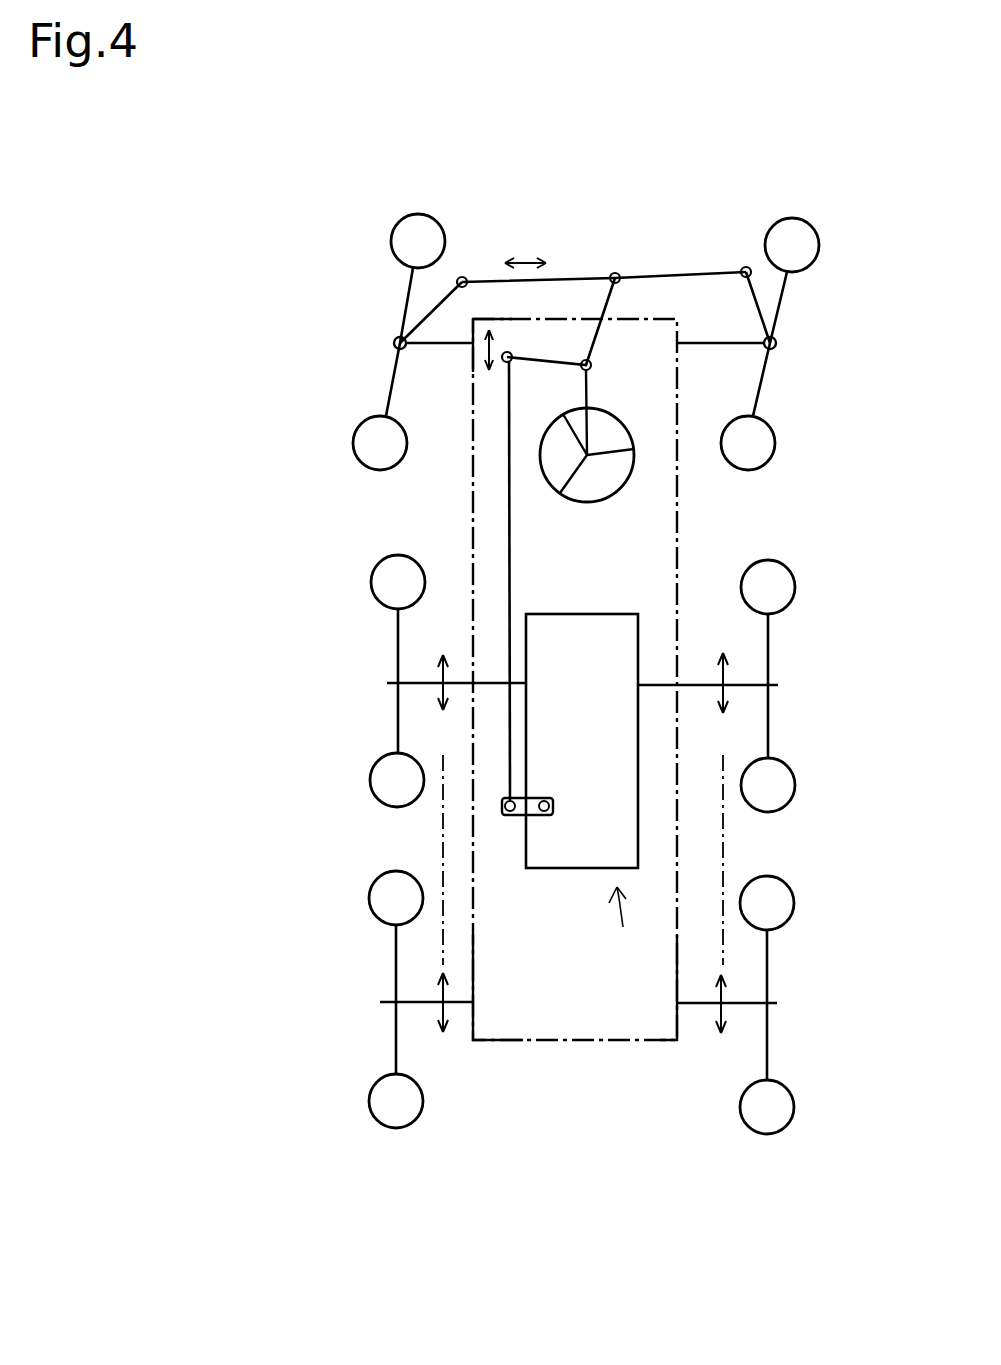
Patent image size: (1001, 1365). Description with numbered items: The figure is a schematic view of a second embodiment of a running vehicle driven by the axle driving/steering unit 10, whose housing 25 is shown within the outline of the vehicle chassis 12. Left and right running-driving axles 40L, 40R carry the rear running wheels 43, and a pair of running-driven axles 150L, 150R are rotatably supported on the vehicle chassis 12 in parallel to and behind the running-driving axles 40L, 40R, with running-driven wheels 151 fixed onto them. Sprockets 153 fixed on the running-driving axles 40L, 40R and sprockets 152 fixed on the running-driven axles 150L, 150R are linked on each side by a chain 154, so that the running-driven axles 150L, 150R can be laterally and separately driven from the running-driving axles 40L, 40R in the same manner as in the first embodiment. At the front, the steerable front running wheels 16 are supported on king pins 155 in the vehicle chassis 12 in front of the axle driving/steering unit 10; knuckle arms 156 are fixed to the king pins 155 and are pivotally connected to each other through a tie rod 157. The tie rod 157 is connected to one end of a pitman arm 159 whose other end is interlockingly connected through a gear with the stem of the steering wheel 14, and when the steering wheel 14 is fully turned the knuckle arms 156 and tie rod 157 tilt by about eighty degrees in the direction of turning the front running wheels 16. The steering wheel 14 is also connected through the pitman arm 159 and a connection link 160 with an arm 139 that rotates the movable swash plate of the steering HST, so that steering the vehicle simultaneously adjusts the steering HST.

The axle driving/steering unit 10 is at (624, 928).
The vehicle chassis 12 is at (490, 1040).
The steering wheel 14 is at (602, 500).
The front running wheels 16 is at (395, 227).
The housing 25 is at (598, 860).
The left running-driving axle 40L is at (413, 683).
The right running-driving axle 40R is at (752, 690).
The rear running wheels 43 is at (371, 587).
The arm 139 is at (510, 812).
The left running-driven axle 150L is at (387, 1000).
The right running-driven axle 150R is at (777, 1003).
The running-driven wheels 151 is at (369, 893).
The sprockets 152 is at (445, 1012).
The sprockets 153 is at (441, 657).
The chain 154 is at (441, 823).
The king pins 155 is at (393, 343).
The knuckle arms 156 is at (458, 285).
The tie rod 157 is at (660, 274).
The pitman arm 159 is at (613, 272).
The connection link 160 is at (508, 481).